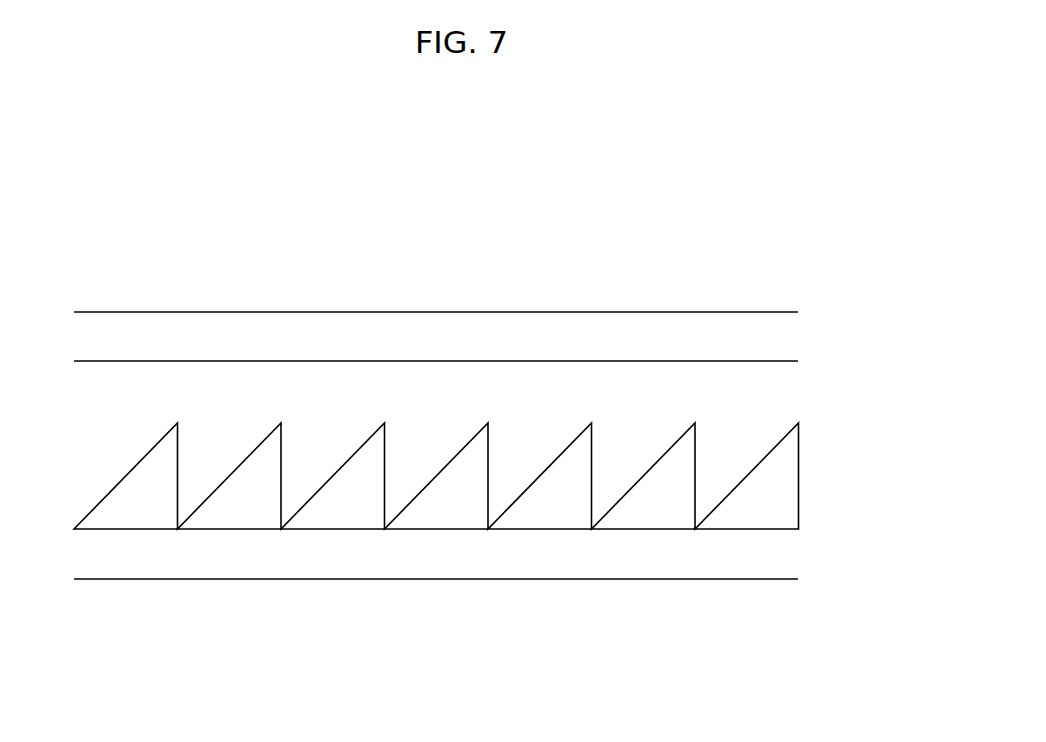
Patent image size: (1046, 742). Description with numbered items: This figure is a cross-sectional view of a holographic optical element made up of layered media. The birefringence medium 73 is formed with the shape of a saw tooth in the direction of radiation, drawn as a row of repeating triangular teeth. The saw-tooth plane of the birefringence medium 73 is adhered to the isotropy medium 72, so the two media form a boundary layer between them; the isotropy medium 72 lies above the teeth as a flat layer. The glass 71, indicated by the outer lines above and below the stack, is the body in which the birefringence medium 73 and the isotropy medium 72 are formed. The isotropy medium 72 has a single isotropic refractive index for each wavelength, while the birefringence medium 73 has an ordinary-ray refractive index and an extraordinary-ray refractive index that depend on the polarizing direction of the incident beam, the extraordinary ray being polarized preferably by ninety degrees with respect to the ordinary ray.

The glass 71 is at (588, 330).
The isotropy medium 72 is at (714, 399).
The birefringence medium 73 is at (767, 500).